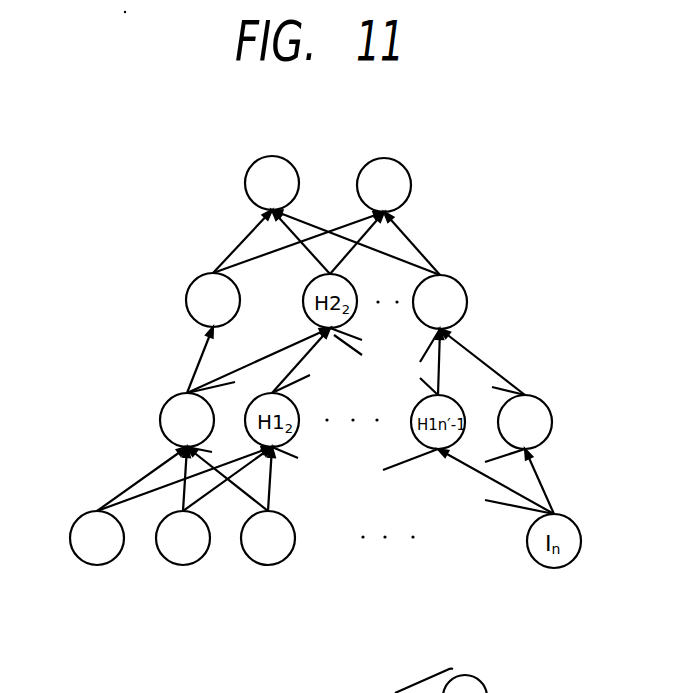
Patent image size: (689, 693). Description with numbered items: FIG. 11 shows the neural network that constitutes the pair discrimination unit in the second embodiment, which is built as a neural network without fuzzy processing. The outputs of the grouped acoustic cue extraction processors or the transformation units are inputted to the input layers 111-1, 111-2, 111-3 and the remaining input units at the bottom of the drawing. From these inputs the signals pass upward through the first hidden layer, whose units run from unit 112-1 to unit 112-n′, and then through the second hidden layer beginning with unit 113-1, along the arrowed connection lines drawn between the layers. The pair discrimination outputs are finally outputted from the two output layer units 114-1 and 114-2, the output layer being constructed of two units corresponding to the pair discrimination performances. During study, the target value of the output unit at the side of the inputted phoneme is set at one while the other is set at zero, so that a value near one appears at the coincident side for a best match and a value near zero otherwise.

The output layer unit 114-1 is at (272, 156).
The output layer unit 114-2 is at (386, 158).
The second hidden layer unit H21 113-1 is at (186, 300).
The first hidden layer unit H11 112-1 is at (160, 420).
The first hidden layer unit H1n′ 112-n′ is at (552, 426).
The input layer 111-1 is at (97, 565).
The input layer 111-2 is at (183, 565).
The input layer 111-3 is at (268, 565).